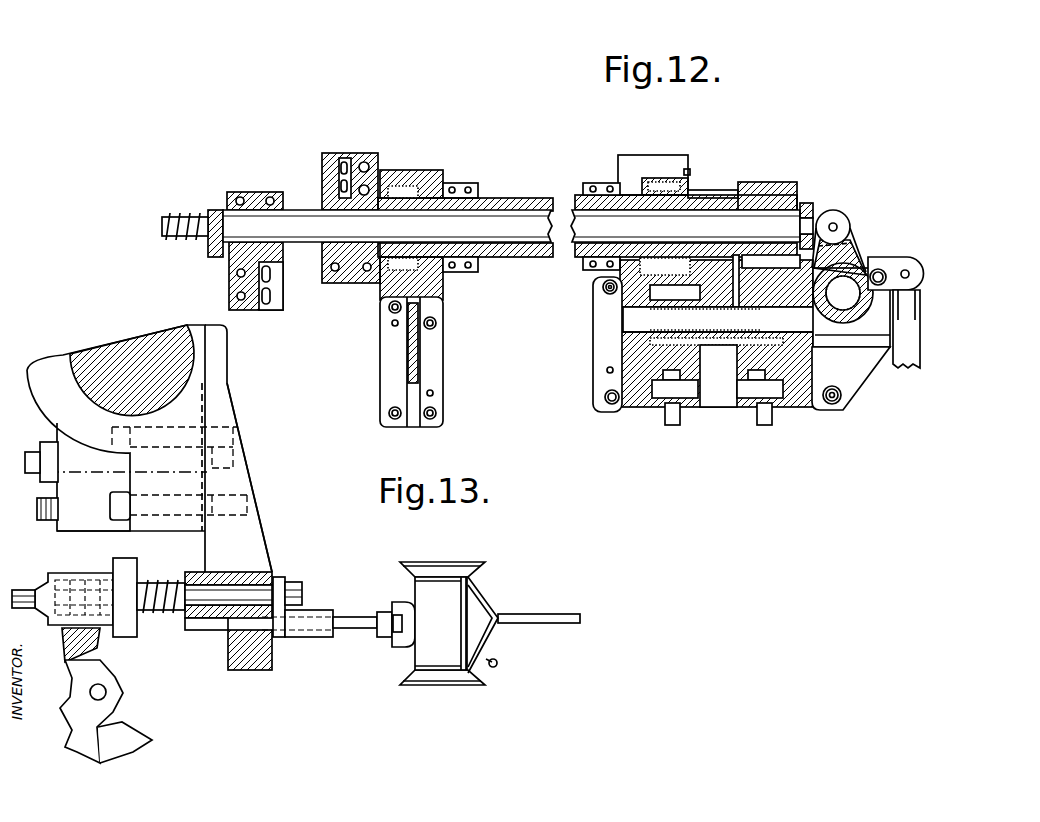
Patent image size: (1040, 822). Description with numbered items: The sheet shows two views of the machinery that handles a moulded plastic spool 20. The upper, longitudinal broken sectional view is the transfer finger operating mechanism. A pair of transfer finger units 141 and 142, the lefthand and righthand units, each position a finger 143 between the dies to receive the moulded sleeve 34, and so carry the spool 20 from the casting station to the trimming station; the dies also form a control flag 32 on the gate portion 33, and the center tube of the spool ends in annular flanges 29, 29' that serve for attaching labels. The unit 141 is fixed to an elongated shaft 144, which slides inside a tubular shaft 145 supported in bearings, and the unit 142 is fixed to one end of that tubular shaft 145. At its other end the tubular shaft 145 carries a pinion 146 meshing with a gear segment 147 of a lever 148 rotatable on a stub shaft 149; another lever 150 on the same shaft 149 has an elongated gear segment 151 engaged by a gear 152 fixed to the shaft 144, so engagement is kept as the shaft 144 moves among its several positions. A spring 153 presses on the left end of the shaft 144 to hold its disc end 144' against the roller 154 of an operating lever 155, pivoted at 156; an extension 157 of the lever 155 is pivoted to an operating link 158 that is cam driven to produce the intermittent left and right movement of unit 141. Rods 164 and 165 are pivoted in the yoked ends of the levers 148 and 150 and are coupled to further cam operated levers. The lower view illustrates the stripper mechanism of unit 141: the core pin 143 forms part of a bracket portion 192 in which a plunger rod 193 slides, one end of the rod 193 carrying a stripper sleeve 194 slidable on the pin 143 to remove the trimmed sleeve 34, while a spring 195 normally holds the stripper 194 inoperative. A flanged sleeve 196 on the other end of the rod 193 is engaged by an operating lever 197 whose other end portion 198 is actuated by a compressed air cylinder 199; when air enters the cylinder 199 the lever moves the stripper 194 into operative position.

In FIG. 12, the transfer finger unit 141 is at (252, 198).
In FIG. 13, the transfer finger unit 141 is at (237, 420).
In FIG. 12, the transfer finger unit 142 is at (358, 153).
In FIG. 13, the finger 143 is at (348, 633).
In FIG. 12, the elongated shaft 144 is at (387, 193).
In FIG. 13, the elongated shaft 144 is at (132, 365).
In FIG. 12, the disc end 144' is at (854, 202).
In FIG. 12, the tubular shaft 145 is at (513, 210).
In FIG. 12, the pinion 146 is at (713, 190).
In FIG. 12, the gear segment 147 is at (620, 303).
In FIG. 12, the lever 148 is at (597, 358).
In FIG. 12, the stub shaft 149 is at (633, 325).
In FIG. 12, the lever 150 is at (817, 363).
In FIG. 12, the elongated gear segment 151 is at (800, 268).
In FIG. 12, the gear 152 is at (797, 183).
In FIG. 12, the spring 153 is at (180, 225).
In FIG. 12, the roller 154 is at (845, 212).
In FIG. 12, the operating lever 155 is at (850, 240).
In FIG. 12, the pivot 156 is at (850, 293).
In FIG. 12, the extension 157 is at (923, 283).
In FIG. 12, the operating link 158 is at (922, 352).
In FIG. 12, the rod 164 is at (670, 412).
In FIG. 12, the rod 165 is at (757, 412).
In FIG. 13, the bracket portion 192 is at (250, 483).
In FIG. 13, the plunger rod 193 is at (238, 593).
In FIG. 13, the stripper sleeve 194 is at (318, 610).
In FIG. 13, the spring 195 is at (155, 583).
In FIG. 13, the flanged sleeve 196 is at (75, 573).
In FIG. 13, the operating lever 197 is at (88, 650).
In FIG. 13, the end portion of lever 198 is at (77, 743).
In FIG. 13, the compressed air cylinder 199 is at (147, 740).
In FIG. 13, the spool 20 is at (470, 618).
In FIG. 13, the annular flange 29 is at (442, 698).
In FIG. 13, the annular flange 29' is at (454, 552).
In FIG. 13, the control flag 32 is at (502, 663).
In FIG. 13, the gate portion 33 is at (498, 640).
In FIG. 13, the sleeve 34 is at (385, 642).